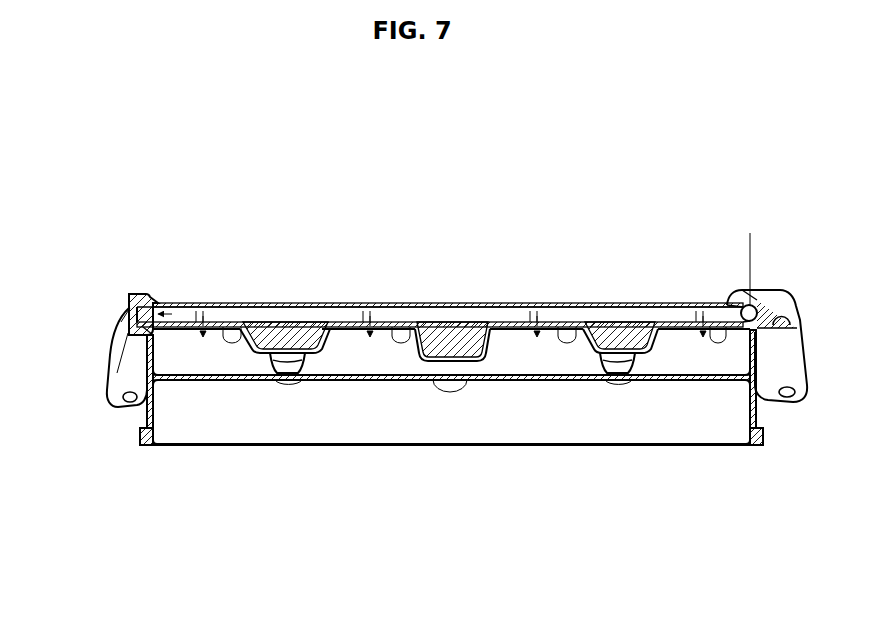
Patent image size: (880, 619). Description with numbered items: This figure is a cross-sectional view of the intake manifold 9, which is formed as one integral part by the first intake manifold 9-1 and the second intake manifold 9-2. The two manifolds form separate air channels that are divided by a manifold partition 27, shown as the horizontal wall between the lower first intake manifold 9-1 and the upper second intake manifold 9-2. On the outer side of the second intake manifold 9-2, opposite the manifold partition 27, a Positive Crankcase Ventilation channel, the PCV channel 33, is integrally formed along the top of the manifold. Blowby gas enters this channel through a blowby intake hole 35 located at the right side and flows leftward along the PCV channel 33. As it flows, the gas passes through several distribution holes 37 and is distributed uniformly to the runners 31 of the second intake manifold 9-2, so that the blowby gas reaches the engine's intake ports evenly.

The intake manifold 9 is at (112, 303).
The first intake manifold 9-1 is at (178, 420).
The second intake manifold 9-2 is at (175, 357).
The manifold partition 27 is at (238, 381).
The runners 31 is at (238, 322).
The PCV channel 33 is at (630, 312).
The blowby intake hole 35 is at (757, 300).
The distribution holes 37 is at (197, 320).